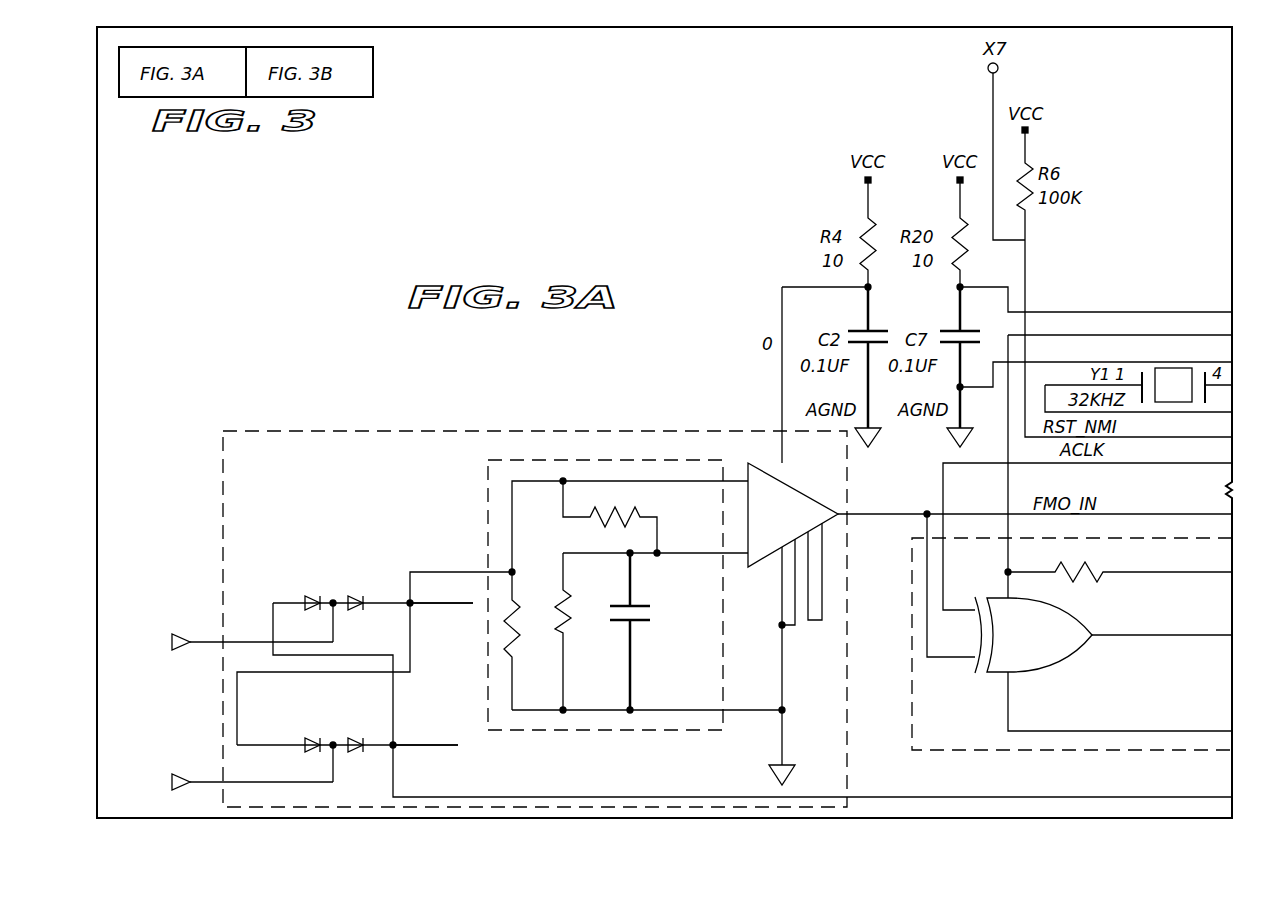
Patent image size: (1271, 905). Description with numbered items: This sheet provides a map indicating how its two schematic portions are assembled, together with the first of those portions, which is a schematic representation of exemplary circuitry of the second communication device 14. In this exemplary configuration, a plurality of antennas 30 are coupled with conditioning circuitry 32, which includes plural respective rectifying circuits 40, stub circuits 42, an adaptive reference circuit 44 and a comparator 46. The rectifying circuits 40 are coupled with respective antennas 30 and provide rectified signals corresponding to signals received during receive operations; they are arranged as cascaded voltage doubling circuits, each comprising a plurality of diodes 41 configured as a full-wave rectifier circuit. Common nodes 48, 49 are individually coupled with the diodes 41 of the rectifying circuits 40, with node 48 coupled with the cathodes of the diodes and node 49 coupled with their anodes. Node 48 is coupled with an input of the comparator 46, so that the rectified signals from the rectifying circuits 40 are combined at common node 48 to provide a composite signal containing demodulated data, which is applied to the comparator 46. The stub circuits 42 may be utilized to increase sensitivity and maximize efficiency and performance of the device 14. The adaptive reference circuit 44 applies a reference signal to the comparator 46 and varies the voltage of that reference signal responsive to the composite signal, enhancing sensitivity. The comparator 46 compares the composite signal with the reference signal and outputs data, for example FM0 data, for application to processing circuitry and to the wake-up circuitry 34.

The second communication device 14 is at (163, 336).
The antennas 30 is at (166, 641).
The conditioning circuitry 32 is at (362, 431).
The wake-up circuitry 34 is at (911, 710).
The rectifying circuits 40 is at (423, 688).
The diodes 41 is at (350, 609).
The stub circuits 42 is at (437, 602).
The adaptive reference circuit 44 is at (622, 458).
The comparator 46 is at (790, 484).
The common node 48 is at (410, 571).
The common node 49 is at (393, 748).